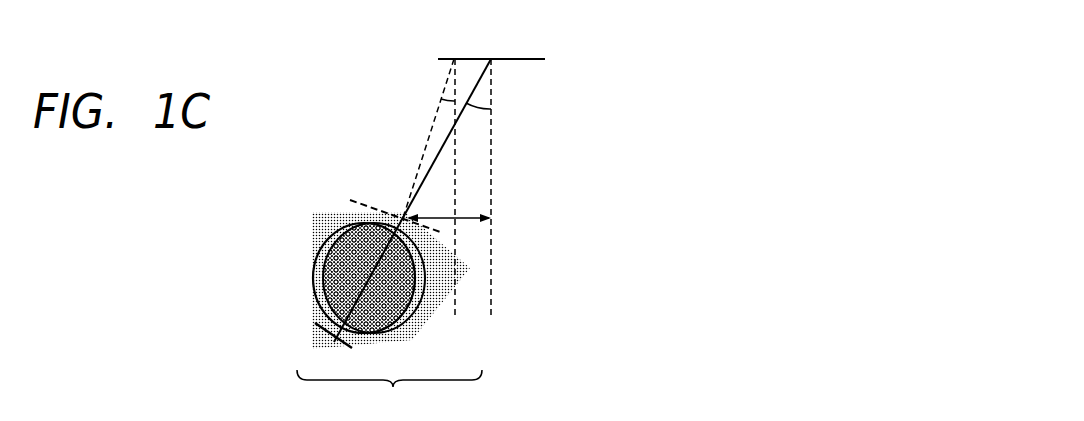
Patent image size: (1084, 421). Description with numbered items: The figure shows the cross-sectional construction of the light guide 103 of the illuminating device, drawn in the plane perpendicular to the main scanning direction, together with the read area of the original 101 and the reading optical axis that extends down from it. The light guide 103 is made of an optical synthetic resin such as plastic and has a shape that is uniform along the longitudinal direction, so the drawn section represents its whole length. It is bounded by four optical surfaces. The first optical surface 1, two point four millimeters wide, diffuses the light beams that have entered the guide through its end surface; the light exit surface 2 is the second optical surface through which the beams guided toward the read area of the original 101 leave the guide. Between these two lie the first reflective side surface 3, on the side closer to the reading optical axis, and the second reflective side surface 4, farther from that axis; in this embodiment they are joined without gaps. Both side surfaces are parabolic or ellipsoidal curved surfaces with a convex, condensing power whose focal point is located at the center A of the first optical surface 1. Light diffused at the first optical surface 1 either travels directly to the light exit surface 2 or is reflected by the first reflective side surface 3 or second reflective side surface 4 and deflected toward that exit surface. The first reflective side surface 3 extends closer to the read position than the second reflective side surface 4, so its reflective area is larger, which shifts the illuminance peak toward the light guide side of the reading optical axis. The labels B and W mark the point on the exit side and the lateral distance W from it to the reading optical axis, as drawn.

The first optical surface 1 is at (317, 327).
The light exit surface 2 is at (342, 210).
The first reflective side surface 3 is at (423, 307).
The second reflective side surface 4 is at (313, 240).
The original 101 is at (491, 58).
The light guide 103 is at (389, 392).
The center of the first optical surface A is at (337, 334).
The point B on lens surface B is at (401, 216).
The distance between point B and reading optical axis W is at (449, 206).